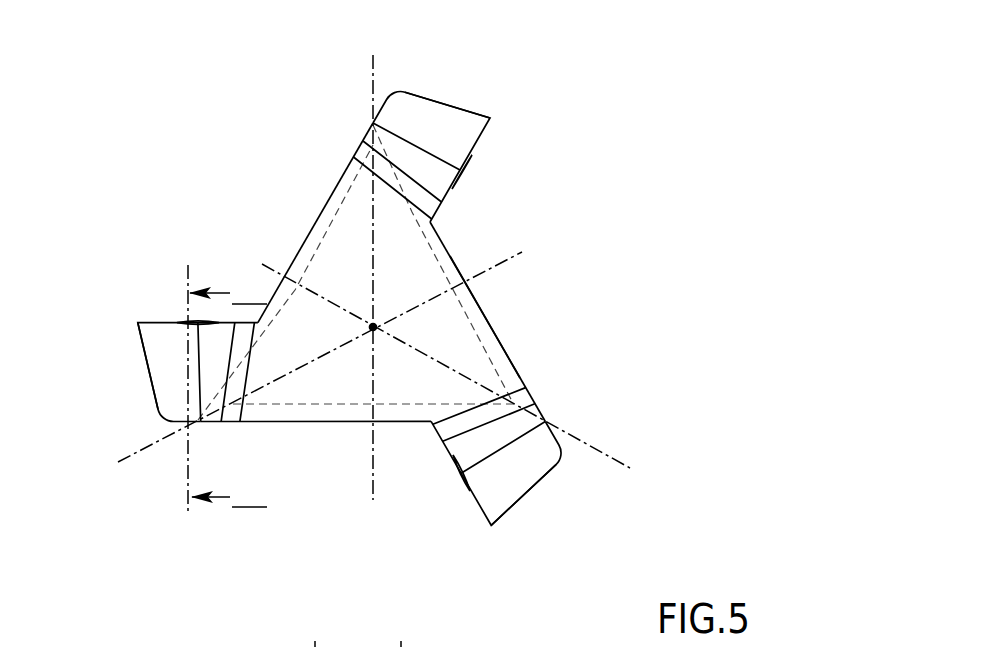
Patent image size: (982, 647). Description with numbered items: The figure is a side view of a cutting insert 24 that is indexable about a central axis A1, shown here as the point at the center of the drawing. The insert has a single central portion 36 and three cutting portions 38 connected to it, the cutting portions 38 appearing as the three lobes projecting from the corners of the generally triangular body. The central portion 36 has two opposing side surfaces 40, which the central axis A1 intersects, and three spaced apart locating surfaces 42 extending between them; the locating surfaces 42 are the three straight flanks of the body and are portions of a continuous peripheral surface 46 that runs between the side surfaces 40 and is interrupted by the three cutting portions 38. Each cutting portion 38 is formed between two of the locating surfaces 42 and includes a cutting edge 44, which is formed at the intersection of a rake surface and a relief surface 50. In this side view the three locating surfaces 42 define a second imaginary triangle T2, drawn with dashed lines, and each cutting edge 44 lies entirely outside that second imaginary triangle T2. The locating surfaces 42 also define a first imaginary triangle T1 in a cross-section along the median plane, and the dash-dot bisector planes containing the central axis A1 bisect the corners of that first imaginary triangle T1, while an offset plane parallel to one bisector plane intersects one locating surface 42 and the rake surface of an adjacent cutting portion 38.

The cutting insert 24 is at (213, 198).
The central portion 36 is at (350, 243).
The cutting portion 38 is at (430, 118).
The side surface 40 is at (438, 328).
The locating surface 42 is at (305, 241).
The cutting edge 44 is at (489, 127).
The peripheral surface 46 is at (496, 336).
The relief surface 50 is at (446, 91).
The central axis A1 is at (399, 327).
The first imaginary triangle T1 is at (427, 247).
The second imaginary triangle T2 is at (408, 182).